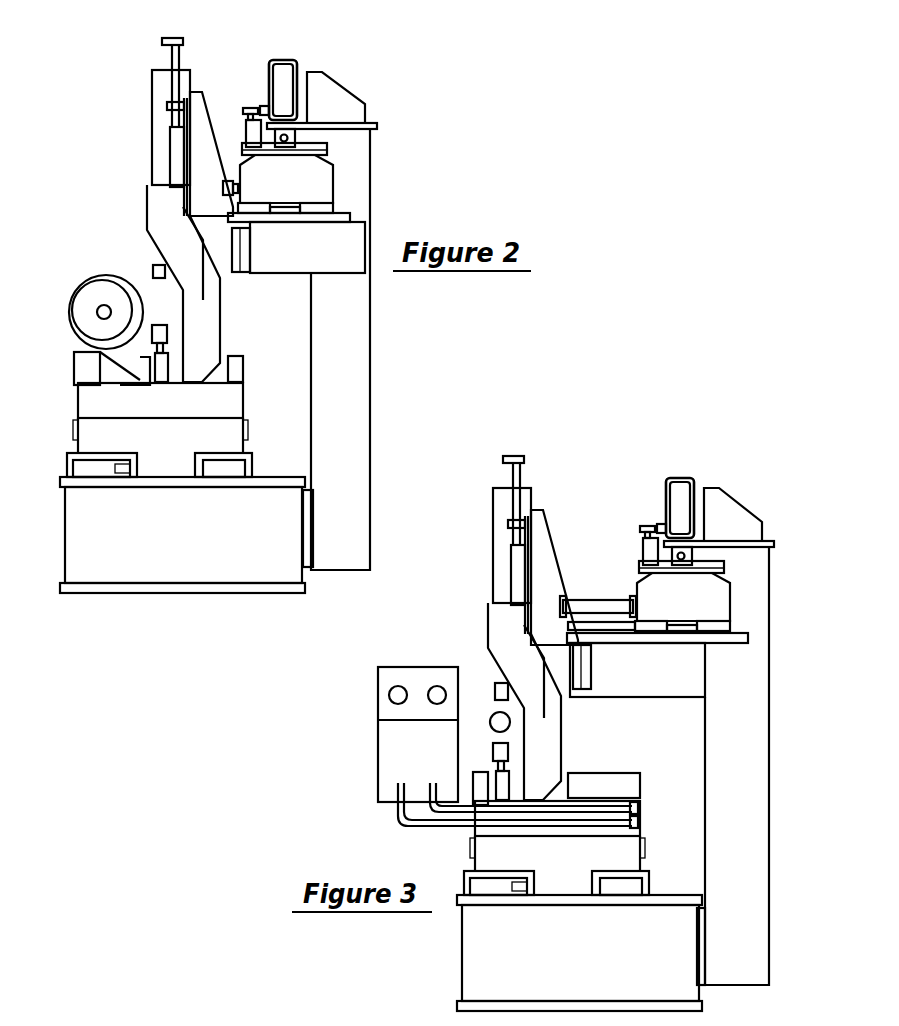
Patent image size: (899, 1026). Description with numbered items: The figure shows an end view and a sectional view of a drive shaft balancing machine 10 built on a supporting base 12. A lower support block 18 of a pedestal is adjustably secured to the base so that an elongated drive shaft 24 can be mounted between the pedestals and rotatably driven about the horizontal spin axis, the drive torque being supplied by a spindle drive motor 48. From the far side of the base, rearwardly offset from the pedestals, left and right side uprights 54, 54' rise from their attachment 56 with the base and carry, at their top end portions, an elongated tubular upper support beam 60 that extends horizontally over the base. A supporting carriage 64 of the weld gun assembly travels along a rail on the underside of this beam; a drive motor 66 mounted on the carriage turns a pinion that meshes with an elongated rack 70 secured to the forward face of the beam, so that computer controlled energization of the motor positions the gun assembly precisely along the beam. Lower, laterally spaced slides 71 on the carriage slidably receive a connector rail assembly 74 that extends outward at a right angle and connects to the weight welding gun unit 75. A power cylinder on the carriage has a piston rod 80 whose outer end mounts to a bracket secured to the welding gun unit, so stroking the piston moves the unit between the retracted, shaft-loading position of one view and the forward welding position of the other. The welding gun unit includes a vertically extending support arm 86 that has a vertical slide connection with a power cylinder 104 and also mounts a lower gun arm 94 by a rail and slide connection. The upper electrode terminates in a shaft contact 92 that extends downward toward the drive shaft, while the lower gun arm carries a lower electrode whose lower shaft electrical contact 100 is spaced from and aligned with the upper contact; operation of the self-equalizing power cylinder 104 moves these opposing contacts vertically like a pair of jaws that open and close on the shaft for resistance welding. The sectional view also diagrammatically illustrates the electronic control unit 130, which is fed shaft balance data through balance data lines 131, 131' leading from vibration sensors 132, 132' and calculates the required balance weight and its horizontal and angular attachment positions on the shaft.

In FIG. 2, the drive shaft balancing machine 10 is at (356, 79).
In FIG. 2, the supporting base 12 is at (80, 543).
In FIG. 3, the supporting base 12 is at (477, 962).
In FIG. 2, the lower support block 18 is at (97, 398).
In FIG. 3, the lower support block 18 is at (487, 858).
In FIG. 3, the drive shaft 24 is at (492, 712).
In FIG. 2, the spindle drive motor 48 is at (78, 286).
In FIG. 2, the left side upright 54 is at (368, 349).
In FIG. 3, the right side upright 54' is at (738, 736).
In FIG. 2, the upright attachment 56 is at (315, 539).
In FIG. 2, the upper support beam 60 is at (283, 60).
In FIG. 3, the upper support beam 60 is at (679, 478).
In FIG. 2, the supporting carriage 64 is at (320, 177).
In FIG. 3, the supporting carriage 64 is at (712, 595).
In FIG. 3, the drive motor 66 is at (640, 548).
In FIG. 3, the rack 70 is at (663, 522).
In FIG. 3, the slides 71 is at (654, 630).
In FIG. 3, the connector rail assembly 74 is at (613, 634).
In FIG. 2, the welding gun unit 75 is at (138, 112).
In FIG. 3, the welding gun unit 75 is at (556, 517).
In FIG. 3, the piston rod 80 is at (598, 603).
In FIG. 2, the support arm 86 is at (202, 118).
In FIG. 3, the support arm 86 is at (543, 570).
In FIG. 2, the shaft contact 92 is at (153, 270).
In FIG. 2, the lower gun arm 94 is at (208, 332).
In FIG. 3, the lower gun arm 94 is at (540, 757).
In FIG. 2, the lower shaft electrical contact 100 is at (167, 335).
In FIG. 2, the power cylinder 104 is at (172, 150).
In FIG. 3, the power cylinder 104 is at (510, 567).
In FIG. 3, the electronic control unit 130 is at (364, 740).
In FIG. 3, the balance data line 131 is at (508, 818).
In FIG. 3, the balance data line 131' is at (478, 813).
In FIG. 3, the vibration sensor 132 is at (688, 804).
In FIG. 3, the vibration sensor 132' is at (692, 832).